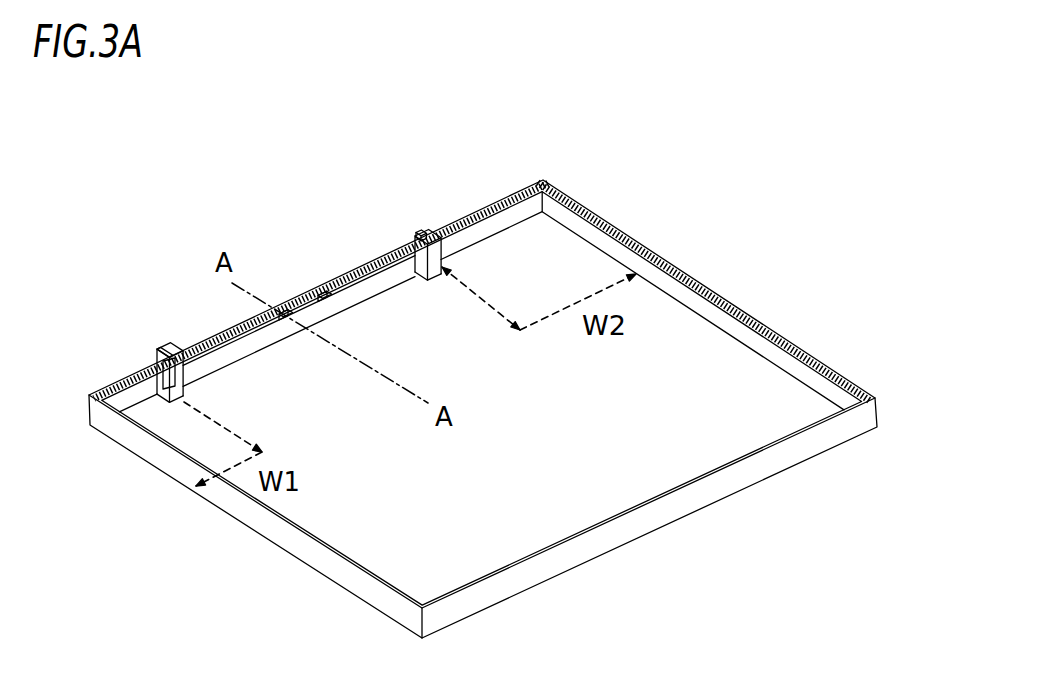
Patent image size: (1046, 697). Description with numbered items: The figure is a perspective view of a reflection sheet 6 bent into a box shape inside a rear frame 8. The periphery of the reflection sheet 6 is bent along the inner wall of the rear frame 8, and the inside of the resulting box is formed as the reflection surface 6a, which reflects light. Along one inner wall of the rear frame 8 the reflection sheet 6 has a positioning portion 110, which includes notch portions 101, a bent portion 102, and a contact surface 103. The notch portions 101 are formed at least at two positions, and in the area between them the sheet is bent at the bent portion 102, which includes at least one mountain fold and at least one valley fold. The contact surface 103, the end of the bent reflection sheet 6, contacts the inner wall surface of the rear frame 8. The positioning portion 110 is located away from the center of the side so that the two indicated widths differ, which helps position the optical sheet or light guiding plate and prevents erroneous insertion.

The reflection sheet 6 is at (678, 286).
The reflection surface 6a is at (521, 497).
The rear frame 8 is at (311, 551).
The positioning portion 110 is at (542, 101).
The notch portion 101 is at (184, 374).
The bent portion 102 is at (281, 314).
The contact surface 103 is at (158, 360).